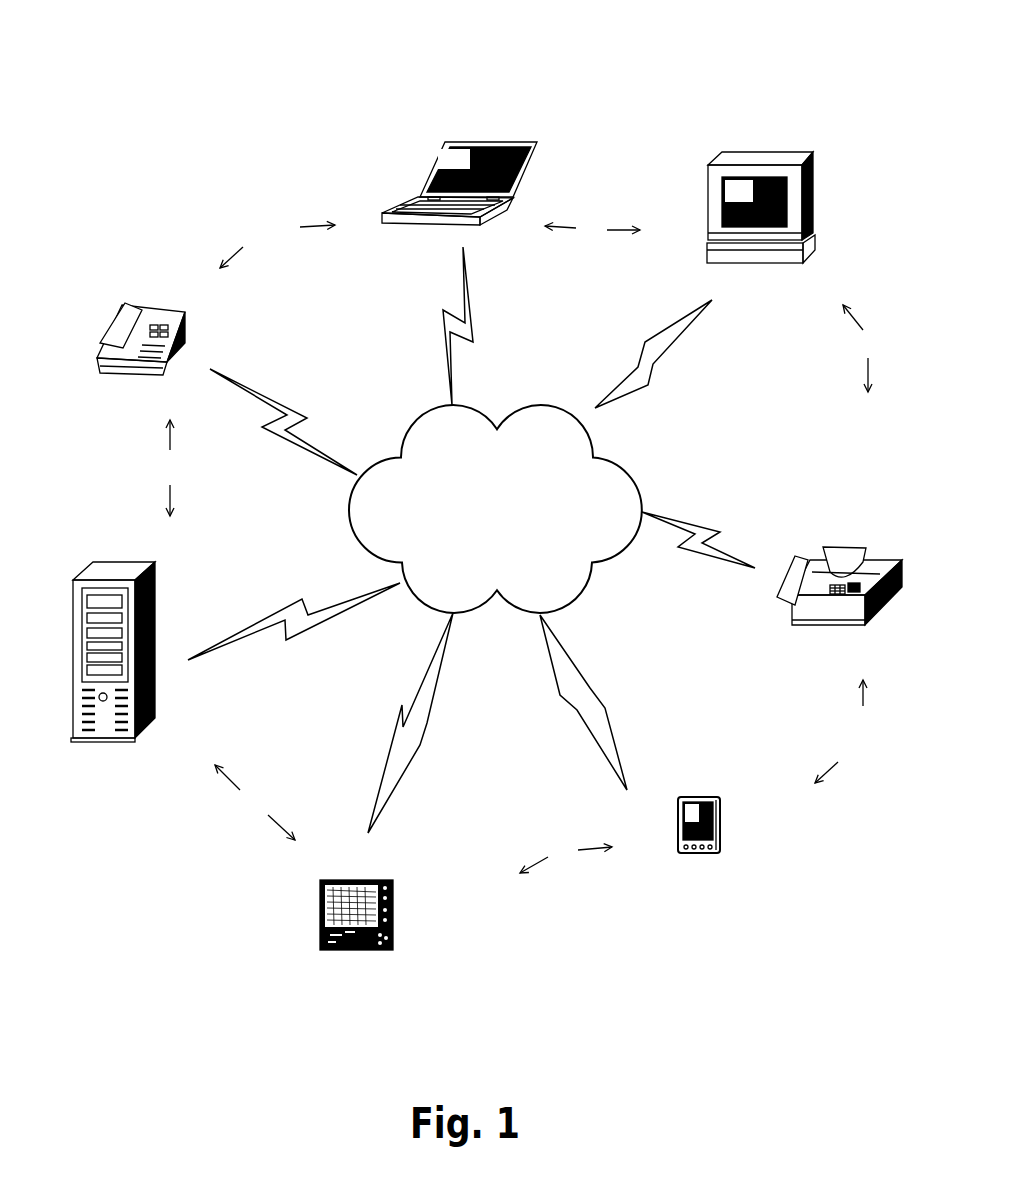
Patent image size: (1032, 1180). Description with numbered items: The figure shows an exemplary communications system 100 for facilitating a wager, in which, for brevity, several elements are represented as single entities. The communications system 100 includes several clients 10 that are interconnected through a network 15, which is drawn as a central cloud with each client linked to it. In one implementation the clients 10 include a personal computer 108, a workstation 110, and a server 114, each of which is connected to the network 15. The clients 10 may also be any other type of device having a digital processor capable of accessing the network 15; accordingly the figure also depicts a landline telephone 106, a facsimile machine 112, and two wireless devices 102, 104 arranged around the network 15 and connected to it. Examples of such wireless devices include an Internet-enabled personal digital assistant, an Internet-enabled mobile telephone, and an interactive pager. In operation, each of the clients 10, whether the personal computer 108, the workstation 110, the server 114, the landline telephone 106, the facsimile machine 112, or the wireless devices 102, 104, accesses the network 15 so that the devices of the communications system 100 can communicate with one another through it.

The communications system 100 is at (631, 49).
The network 15 is at (528, 388).
The clients 10 is at (523, 546).
The wireless device 102 is at (357, 880).
The wireless device 104 is at (703, 797).
The landline telephone 106 is at (138, 295).
The personal computer 108 is at (465, 130).
The workstation 110 is at (785, 142).
The facsimile machine 112 is at (872, 535).
The server 114 is at (115, 552).